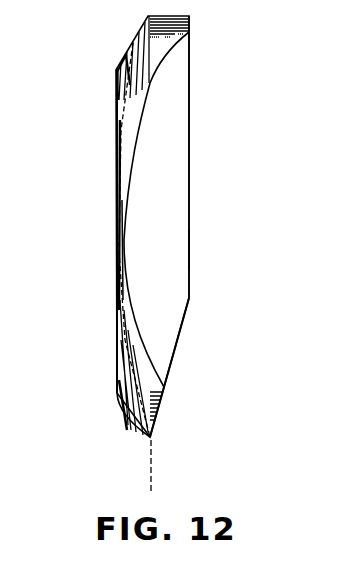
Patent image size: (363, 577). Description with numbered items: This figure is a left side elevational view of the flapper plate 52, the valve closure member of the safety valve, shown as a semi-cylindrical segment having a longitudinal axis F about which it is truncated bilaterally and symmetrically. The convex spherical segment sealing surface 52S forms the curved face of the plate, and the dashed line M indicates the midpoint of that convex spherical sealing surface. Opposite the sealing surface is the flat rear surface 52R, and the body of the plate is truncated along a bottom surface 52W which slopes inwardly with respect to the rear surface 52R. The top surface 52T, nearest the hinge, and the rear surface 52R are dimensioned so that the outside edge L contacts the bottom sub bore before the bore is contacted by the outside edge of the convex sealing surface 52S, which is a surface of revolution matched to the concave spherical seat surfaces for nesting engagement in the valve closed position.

The flapper plate 52 is at (108, 61).
The dashed line indicating the midpoint of the convex spherical sealing segment surf M is at (118, 108).
The top surface 52T is at (118, 196).
The rear surface 52R is at (189, 124).
The outside edge L is at (190, 248).
The convex spherical segment sealing surface 52S is at (135, 388).
The bottom surface 52W is at (172, 372).
The longitudinal axis F is at (154, 470).